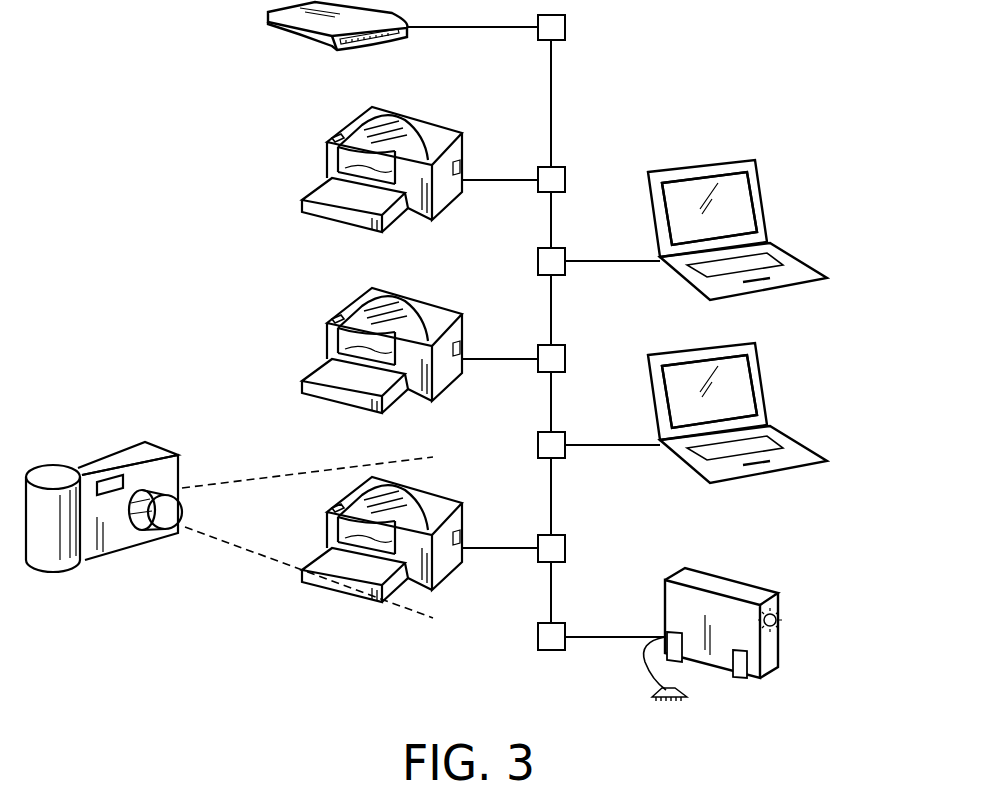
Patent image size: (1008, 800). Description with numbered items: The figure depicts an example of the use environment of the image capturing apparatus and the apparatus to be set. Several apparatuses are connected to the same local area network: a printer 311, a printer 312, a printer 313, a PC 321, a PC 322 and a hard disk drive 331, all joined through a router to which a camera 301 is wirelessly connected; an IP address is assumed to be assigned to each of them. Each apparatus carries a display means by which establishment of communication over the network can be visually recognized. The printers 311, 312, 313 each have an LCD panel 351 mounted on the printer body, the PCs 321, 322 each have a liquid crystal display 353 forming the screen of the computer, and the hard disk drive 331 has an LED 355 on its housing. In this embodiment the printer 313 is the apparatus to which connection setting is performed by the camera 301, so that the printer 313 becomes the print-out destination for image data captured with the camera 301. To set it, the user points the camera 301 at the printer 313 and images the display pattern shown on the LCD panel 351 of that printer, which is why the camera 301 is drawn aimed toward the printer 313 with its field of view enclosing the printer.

The camera 301 is at (77, 441).
The printer 311 is at (440, 225).
The printer 312 is at (402, 381).
The printer 313 is at (402, 570).
The PC 321 is at (822, 292).
The PC 322 is at (776, 432).
The hard disk drive 331 is at (798, 672).
The LCD panel 351 is at (332, 139).
The liquid crystal display 353 is at (743, 206).
The LED 355 is at (788, 614).